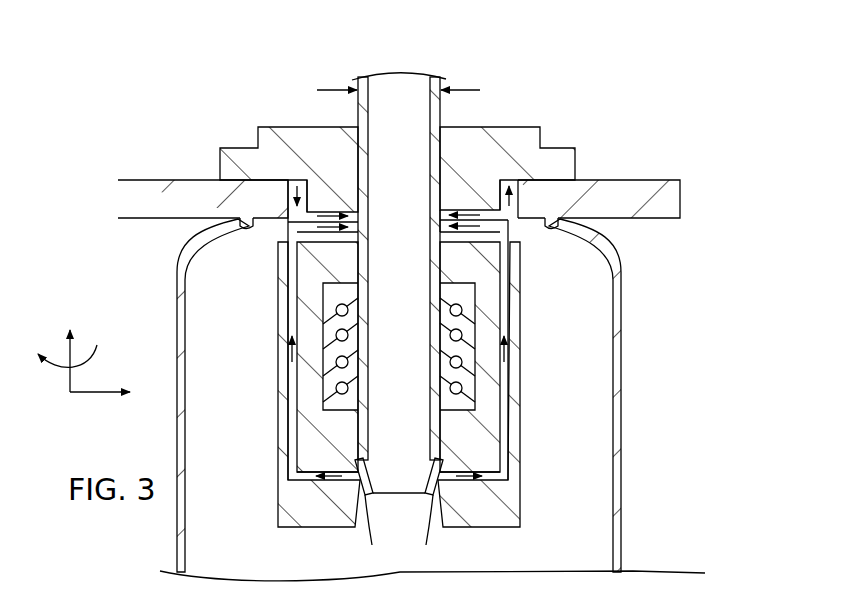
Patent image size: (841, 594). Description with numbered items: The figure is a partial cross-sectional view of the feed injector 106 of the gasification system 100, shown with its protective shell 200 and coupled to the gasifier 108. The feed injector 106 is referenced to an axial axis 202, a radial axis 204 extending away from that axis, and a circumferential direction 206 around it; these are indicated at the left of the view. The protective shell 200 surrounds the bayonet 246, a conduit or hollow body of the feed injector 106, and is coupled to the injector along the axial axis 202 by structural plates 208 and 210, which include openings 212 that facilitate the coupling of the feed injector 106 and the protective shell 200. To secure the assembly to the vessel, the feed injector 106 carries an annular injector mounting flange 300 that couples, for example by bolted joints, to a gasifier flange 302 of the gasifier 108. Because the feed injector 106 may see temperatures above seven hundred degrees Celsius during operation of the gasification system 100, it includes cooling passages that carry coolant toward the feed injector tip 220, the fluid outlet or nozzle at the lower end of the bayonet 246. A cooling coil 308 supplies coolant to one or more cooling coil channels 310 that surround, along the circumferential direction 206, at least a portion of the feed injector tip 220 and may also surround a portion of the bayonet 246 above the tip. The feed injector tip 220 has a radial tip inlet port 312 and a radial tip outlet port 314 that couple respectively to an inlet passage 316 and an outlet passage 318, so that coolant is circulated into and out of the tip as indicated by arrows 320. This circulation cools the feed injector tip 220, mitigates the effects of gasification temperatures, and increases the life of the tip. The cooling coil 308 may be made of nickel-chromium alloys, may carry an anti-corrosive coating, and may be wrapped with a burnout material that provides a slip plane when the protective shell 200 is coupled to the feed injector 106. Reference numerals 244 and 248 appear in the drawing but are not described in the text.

The gasification system 100 is at (128, 83).
The feed injector 106 is at (263, 110).
The gasifier 108 is at (620, 303).
The protective shell 200 is at (521, 468).
The axial axis 202 is at (72, 342).
The radial axis 204 is at (98, 394).
The circumferential direction 206 is at (95, 350).
The structural plate 208 is at (323, 402).
The structural plate 210 is at (476, 334).
The openings 212 is at (451, 384).
The feed injector tip 220 is at (412, 494).
The conduit tube 244 is at (358, 116).
The bayonet 246 is at (448, 112).
The inflow direction 248 is at (333, 88).
The injector mounting flange 300 is at (540, 136).
The gasifier flange 302 is at (680, 182).
The cooling coil 308 is at (510, 232).
The cooling coil channel 310 is at (424, 500).
The tip inlet port 312 is at (443, 459).
The tip outlet port 314 is at (355, 459).
The inlet passage 316 is at (494, 482).
The outlet passage 318 is at (292, 477).
The arrows 320 is at (330, 210).